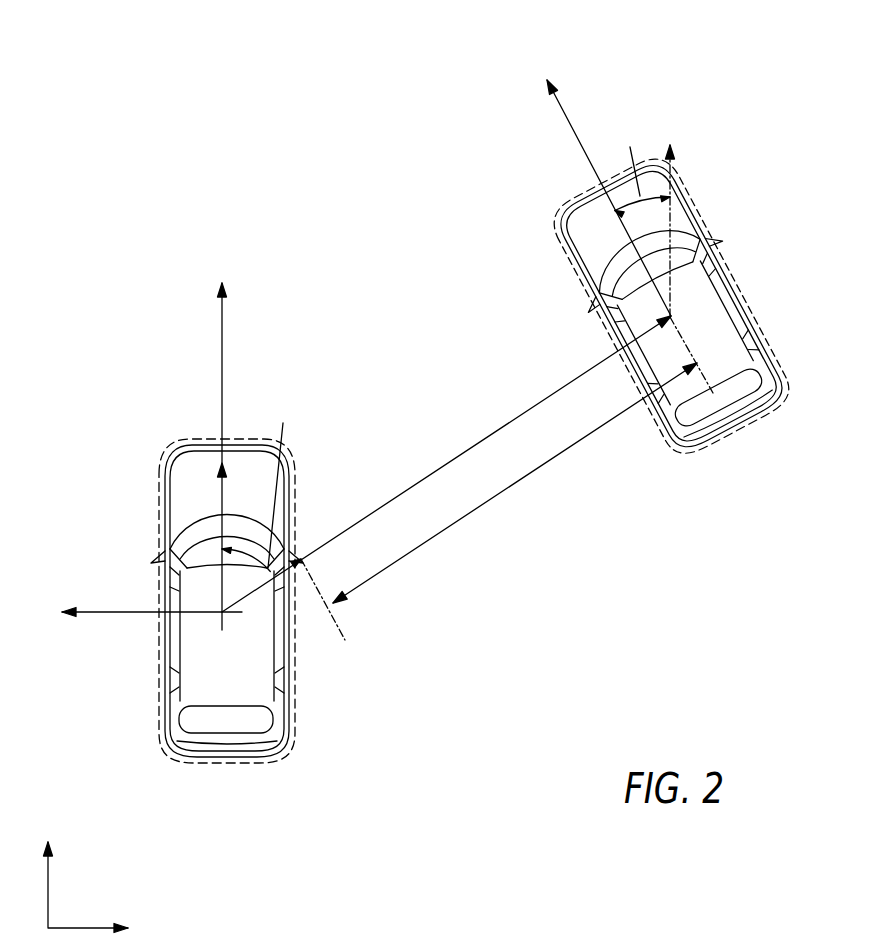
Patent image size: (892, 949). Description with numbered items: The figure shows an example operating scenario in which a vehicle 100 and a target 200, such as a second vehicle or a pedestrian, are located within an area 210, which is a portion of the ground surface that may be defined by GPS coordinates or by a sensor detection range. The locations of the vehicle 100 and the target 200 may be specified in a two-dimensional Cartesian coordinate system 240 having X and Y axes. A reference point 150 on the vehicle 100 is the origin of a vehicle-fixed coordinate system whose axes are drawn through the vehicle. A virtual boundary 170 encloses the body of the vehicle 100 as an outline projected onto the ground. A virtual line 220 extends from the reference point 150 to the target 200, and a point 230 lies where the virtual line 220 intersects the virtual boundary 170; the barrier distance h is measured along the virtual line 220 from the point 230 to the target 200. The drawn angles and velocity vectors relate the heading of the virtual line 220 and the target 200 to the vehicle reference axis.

The vehicle 100 is at (290, 653).
The reference point 150 is at (222, 612).
The virtual boundary 170 is at (297, 720).
The target 200 is at (697, 264).
The area 210 is at (253, 80).
The virtual line 220 is at (537, 402).
The point 230 is at (301, 558).
The Cartesian coordinate system 240 is at (137, 868).